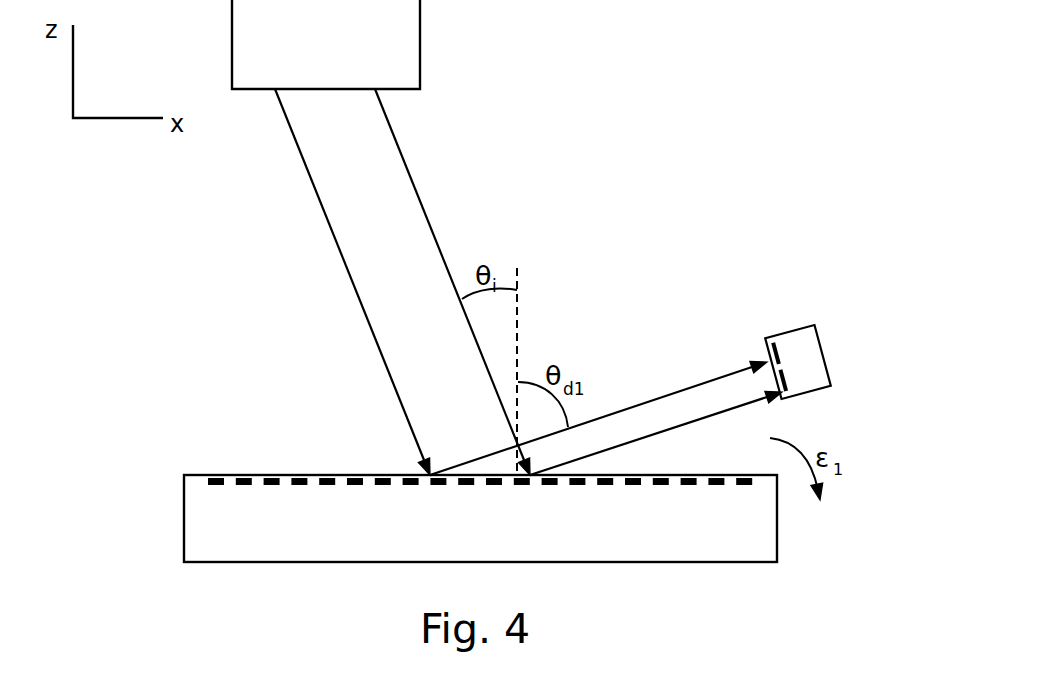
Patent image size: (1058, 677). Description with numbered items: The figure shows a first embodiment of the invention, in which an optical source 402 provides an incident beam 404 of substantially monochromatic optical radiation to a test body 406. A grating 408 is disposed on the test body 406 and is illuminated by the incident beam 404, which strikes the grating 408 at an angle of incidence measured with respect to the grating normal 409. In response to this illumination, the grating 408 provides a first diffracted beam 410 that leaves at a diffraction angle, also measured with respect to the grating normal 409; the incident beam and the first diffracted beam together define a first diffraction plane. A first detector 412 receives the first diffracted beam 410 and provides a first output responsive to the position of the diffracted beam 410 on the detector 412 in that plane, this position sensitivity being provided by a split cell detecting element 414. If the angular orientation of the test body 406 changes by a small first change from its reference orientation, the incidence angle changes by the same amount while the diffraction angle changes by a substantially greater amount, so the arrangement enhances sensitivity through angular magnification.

The optical source 402 is at (420, 44).
The incident beam 404 is at (337, 248).
The test body 406 is at (184, 528).
The grating 408 is at (312, 455).
The grating normal 409 is at (518, 308).
The first diffracted beam 410 is at (642, 403).
The first detector 412 is at (802, 328).
The split cell detecting element 414 is at (778, 358).